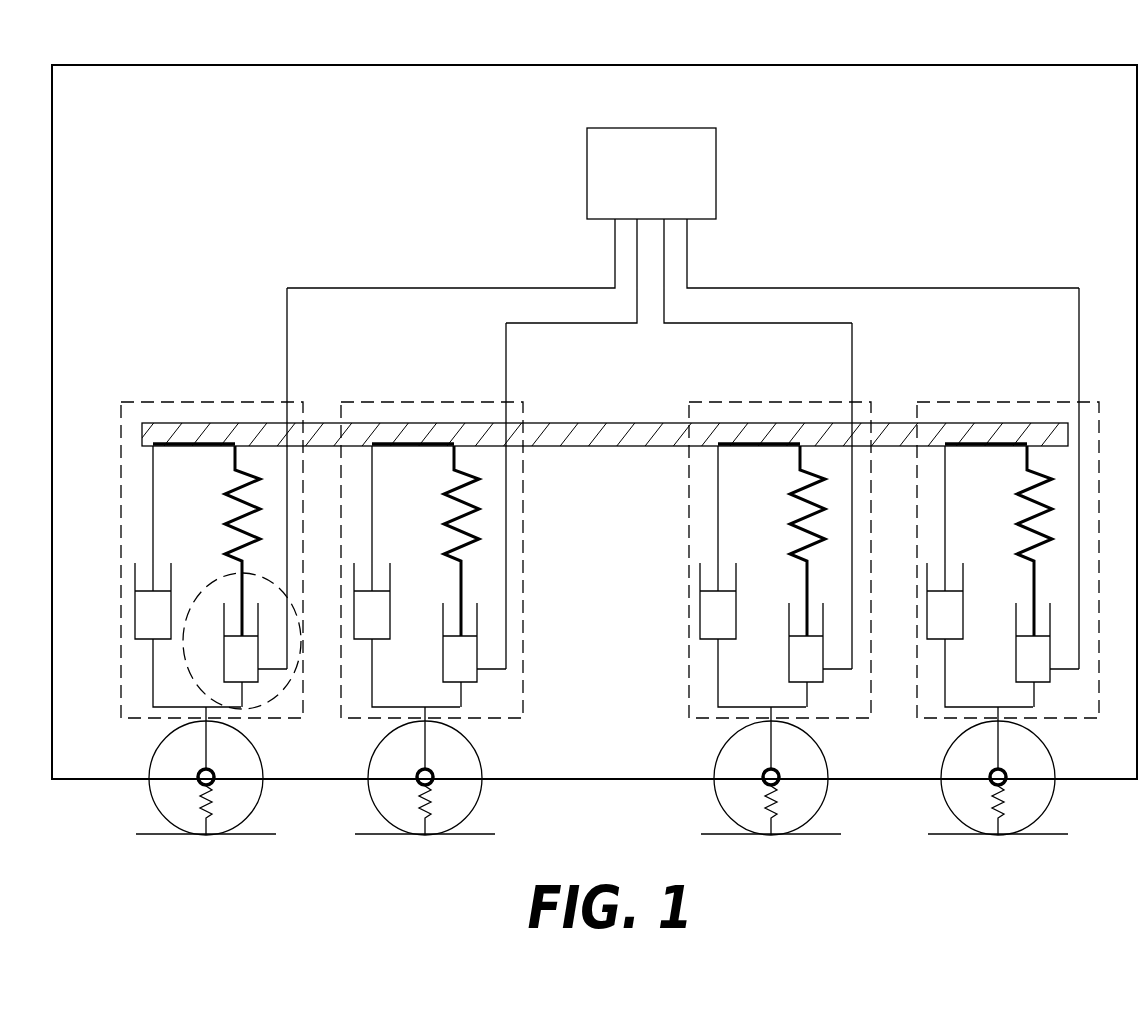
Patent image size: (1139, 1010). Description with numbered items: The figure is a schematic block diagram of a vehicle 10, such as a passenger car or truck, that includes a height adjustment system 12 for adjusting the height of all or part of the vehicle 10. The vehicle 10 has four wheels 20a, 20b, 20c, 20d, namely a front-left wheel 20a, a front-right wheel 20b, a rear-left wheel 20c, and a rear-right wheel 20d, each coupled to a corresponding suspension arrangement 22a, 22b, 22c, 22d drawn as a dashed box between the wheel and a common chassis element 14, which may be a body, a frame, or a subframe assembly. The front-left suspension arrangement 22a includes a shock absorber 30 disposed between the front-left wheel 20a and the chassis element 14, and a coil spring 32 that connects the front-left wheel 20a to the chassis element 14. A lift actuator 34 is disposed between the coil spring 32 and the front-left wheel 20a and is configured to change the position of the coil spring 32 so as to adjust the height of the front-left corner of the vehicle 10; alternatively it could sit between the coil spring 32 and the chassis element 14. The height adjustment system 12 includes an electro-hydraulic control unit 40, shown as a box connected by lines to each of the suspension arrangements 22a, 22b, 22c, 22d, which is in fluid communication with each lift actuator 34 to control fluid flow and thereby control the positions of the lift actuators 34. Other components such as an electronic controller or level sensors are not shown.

The vehicle 10 is at (937, 65).
The height adjustment system 12 is at (209, 199).
The chassis element 14 is at (316, 423).
The front-left wheel 20a is at (171, 760).
The front-right wheel 20b is at (392, 760).
The rear-left wheel 20c is at (744, 760).
The rear-right wheel 20d is at (972, 760).
The front-left suspension arrangement 22a is at (185, 529).
The suspension arrangement 22b is at (405, 401).
The suspension arrangement 22c is at (758, 401).
The suspension arrangement 22d is at (945, 401).
The shock absorber 30 is at (152, 613).
The coil spring 32 is at (228, 488).
The lift actuator 34 is at (237, 646).
The electro-hydraulic control unit 40 is at (716, 141).